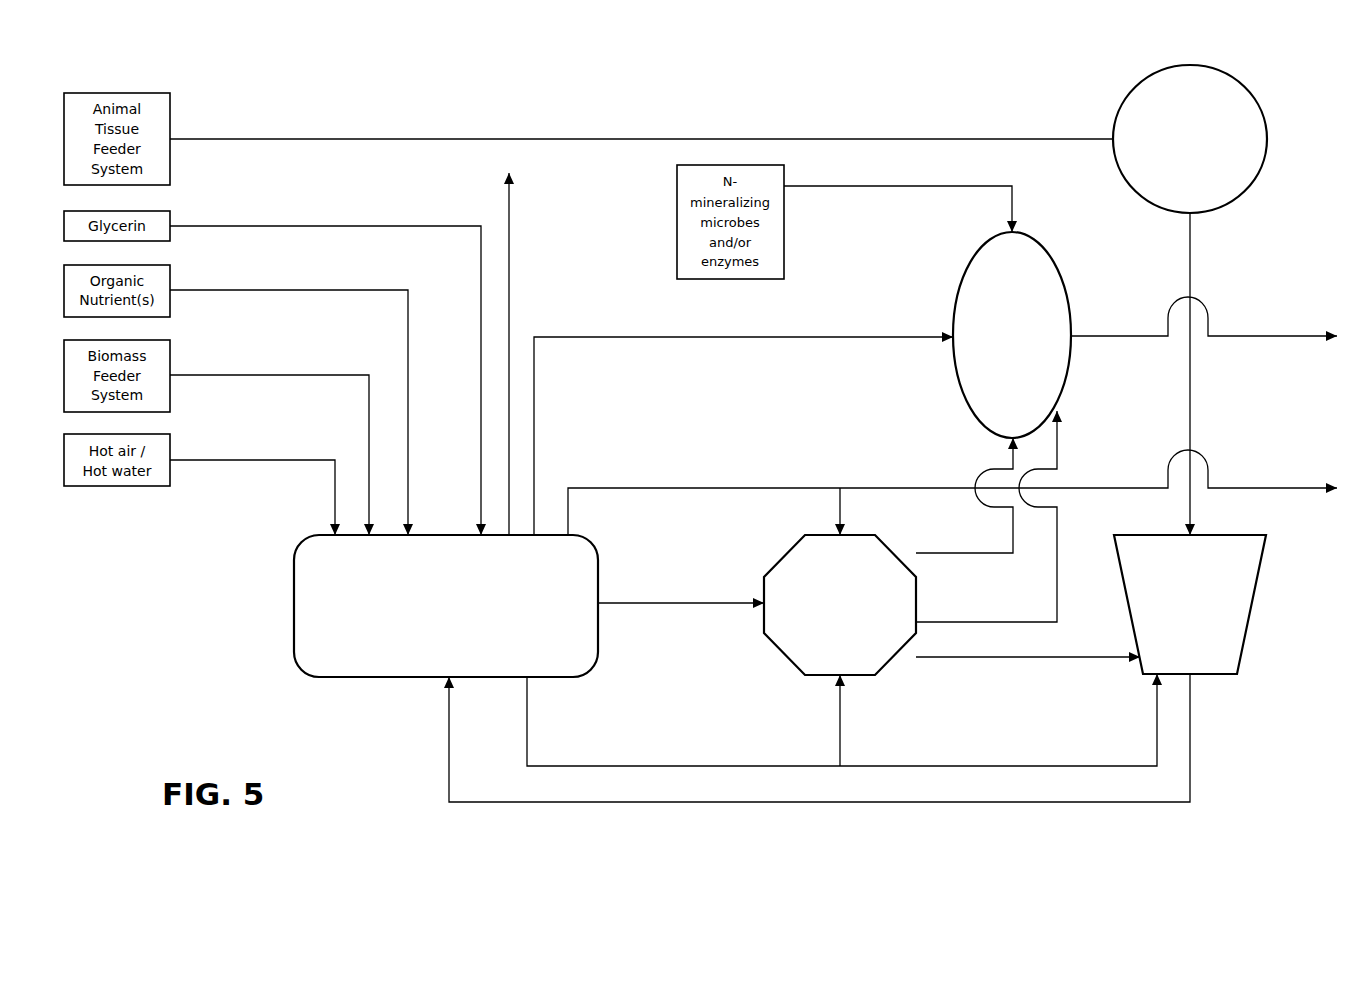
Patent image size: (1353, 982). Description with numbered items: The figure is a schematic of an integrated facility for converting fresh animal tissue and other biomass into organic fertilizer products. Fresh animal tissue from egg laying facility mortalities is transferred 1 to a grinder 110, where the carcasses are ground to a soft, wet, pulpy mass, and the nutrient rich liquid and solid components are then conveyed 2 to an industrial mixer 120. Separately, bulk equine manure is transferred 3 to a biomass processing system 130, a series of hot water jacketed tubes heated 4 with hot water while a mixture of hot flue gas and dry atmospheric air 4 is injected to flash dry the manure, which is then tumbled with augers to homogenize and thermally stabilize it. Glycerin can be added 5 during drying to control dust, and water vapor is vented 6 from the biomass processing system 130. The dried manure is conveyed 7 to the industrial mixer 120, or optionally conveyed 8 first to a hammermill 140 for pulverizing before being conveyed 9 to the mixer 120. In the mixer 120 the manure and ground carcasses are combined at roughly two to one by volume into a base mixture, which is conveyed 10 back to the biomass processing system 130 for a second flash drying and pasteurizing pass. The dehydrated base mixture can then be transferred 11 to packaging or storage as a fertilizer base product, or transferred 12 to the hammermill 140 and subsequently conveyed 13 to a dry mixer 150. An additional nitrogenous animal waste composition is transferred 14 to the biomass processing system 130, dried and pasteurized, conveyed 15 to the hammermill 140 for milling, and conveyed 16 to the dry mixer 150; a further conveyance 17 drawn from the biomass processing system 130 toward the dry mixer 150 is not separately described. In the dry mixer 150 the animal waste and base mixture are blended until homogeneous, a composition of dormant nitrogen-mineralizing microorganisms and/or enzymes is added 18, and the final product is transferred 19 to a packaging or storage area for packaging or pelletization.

The animal tissue transfer 1 is at (876, 139).
The ground tissue conveyance 2 is at (1188, 406).
The equine manure transfer 3 is at (368, 439).
The hot water and hot flue gas/air injection 4 is at (335, 516).
The glycerin addition 5 is at (480, 243).
The water vapor vent 6 is at (510, 200).
The dried manure conveyance to mixer 7 is at (668, 765).
The dried manure conveyance to hammermill 8 is at (841, 730).
The reduced particle size biomass conveyance 9 is at (1000, 658).
The base mixture return conveyance 10 is at (1191, 783).
The base mixture transfer to packaging or storage 11 is at (680, 487).
The base mixture transfer to hammermill 12 is at (838, 510).
The milled base mixture conveyance 13 is at (965, 553).
The nitrogenous animal waste transfer 14 is at (408, 322).
The dried animal waste conveyance to hammermill 15 is at (680, 602).
The milled animal waste conveyance 16 is at (1012, 621).
The stream from unit 130 to unit 150 17 is at (762, 338).
The nitrogen-mineralizing microorganism/enzyme addition 18 is at (869, 186).
The final product transfer 19 is at (1255, 336).
The grinder 110 is at (1190, 139).
The industrial mixer 120 is at (1190, 604).
The biomass processing system 130 is at (446, 606).
The hammermill 140 is at (840, 605).
The dry mixer 150 is at (1012, 335).